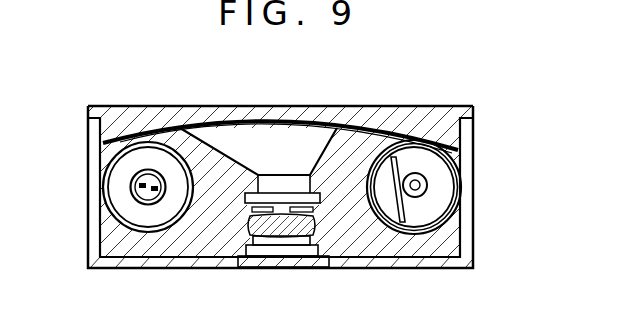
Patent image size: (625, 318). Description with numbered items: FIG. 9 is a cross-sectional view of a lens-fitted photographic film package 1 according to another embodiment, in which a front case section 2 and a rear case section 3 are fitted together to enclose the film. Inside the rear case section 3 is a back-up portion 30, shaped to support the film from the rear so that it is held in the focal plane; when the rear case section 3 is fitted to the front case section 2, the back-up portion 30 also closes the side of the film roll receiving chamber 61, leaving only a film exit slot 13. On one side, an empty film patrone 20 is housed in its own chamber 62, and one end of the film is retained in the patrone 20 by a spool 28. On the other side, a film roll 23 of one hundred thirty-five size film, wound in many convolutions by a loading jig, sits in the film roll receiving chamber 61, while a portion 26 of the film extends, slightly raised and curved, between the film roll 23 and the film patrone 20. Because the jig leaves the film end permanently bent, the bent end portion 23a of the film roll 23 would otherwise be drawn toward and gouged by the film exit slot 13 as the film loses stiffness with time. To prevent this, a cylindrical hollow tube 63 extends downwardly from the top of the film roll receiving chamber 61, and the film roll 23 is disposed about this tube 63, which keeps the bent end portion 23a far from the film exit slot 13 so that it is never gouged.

The film package 1 is at (445, 93).
The front case section 2 is at (132, 268).
The rear case section 3 is at (131, 107).
The film exit slot 13 is at (380, 123).
The film patrone 20 is at (117, 183).
The film roll 23 is at (462, 190).
The bent end portion 23a is at (397, 218).
The portion of the film 26 is at (265, 107).
The spool 28 is at (138, 201).
The back-up portion 30 is at (311, 132).
The film roll receiving chamber 61 is at (460, 150).
The roll inner ring 62 is at (108, 156).
The cylindrical hollow tube 63 is at (416, 176).